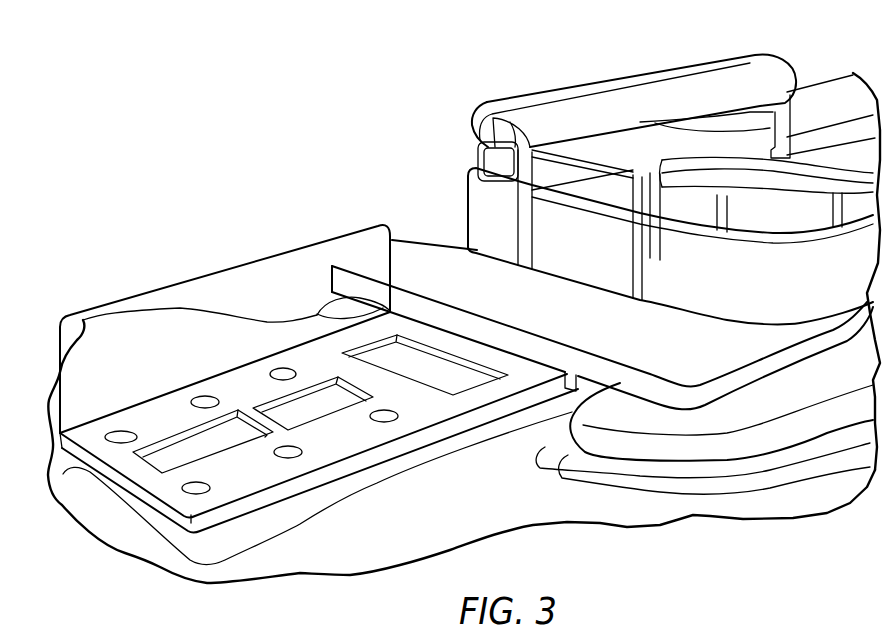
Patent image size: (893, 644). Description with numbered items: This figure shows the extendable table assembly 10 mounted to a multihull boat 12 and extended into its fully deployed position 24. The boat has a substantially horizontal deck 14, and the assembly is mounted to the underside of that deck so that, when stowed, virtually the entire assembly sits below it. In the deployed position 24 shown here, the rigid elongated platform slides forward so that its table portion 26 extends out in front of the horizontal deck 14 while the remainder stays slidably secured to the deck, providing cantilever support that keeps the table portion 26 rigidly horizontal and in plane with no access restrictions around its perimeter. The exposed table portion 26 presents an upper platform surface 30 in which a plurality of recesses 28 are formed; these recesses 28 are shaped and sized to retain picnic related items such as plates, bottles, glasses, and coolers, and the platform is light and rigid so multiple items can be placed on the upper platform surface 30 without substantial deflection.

The extendable table assembly 10 is at (360, 478).
The multihull boat 12 is at (593, 67).
The horizontal deck 14 is at (430, 278).
The deployed position 24 is at (120, 498).
The table portion 26 is at (228, 268).
The recesses 28 is at (210, 453).
The upper platform surface 30 is at (421, 420).